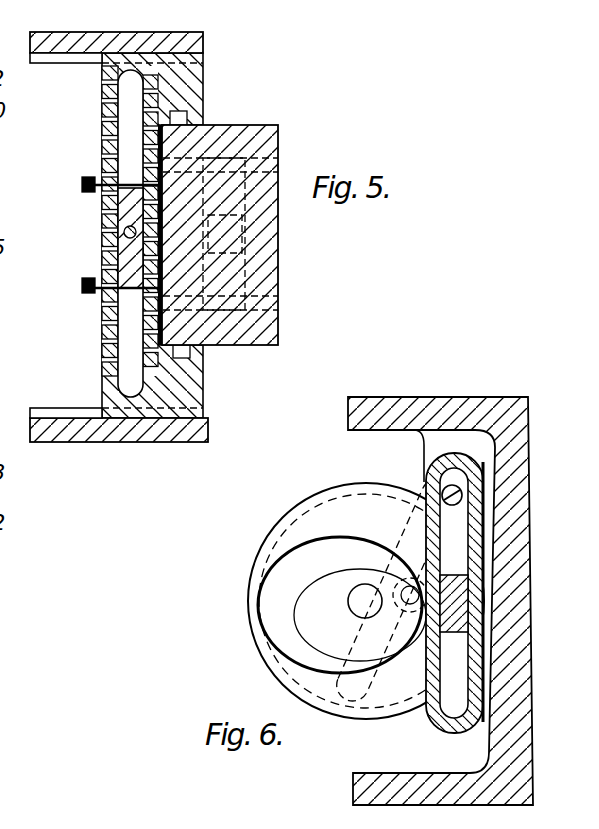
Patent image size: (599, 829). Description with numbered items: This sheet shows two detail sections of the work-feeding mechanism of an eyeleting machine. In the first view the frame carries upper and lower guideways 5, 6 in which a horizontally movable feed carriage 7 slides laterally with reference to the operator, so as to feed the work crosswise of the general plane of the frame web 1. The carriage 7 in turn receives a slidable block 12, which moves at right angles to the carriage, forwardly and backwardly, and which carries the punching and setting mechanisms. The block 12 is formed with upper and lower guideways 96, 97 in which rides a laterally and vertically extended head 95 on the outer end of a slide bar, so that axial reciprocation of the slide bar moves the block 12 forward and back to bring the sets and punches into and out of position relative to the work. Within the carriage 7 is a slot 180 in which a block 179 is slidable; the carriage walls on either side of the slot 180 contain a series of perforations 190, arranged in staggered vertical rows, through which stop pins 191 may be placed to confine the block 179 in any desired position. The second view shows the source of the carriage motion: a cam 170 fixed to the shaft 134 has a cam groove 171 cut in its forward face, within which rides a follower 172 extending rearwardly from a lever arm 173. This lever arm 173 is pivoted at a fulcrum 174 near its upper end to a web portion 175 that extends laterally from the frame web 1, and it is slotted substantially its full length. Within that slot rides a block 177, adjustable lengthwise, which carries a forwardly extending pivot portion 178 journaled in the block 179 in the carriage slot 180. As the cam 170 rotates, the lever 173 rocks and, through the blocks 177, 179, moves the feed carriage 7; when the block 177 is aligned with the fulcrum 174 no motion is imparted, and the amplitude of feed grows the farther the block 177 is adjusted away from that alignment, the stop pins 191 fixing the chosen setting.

In FIG. 6, the frame web 1 is at (516, 500).
In FIG. 5, the upper guideway 5 is at (204, 57).
In FIG. 5, the lower guideway 6 is at (206, 419).
In FIG. 5, the feed carriage 7 is at (183, 376).
In FIG. 5, the slidable block 12 is at (245, 124).
In FIG. 5, the head 95 is at (262, 258).
In FIG. 5, the upper guideway 96 is at (262, 160).
In FIG. 5, the lower guideway 97 is at (265, 308).
In FIG. 6, the shaft 134 is at (352, 604).
In FIG. 6, the cam 170 is at (276, 625).
In FIG. 6, the cam groove 171 is at (290, 567).
In FIG. 6, the follower 172 is at (470, 628).
In FIG. 6, the lever arm 173 is at (446, 727).
In FIG. 6, the pivot 174 is at (430, 480).
In FIG. 6, the web portion 175 is at (458, 433).
In FIG. 6, the block 177 is at (470, 590).
In FIG. 5, the pivot portion 178 is at (104, 258).
In FIG. 5, the slidable block 179 is at (103, 318).
In FIG. 5, the slot 180 is at (128, 108).
In FIG. 5, the perforations 190 is at (106, 240).
In FIG. 5, the stop pins 191 is at (82, 290).